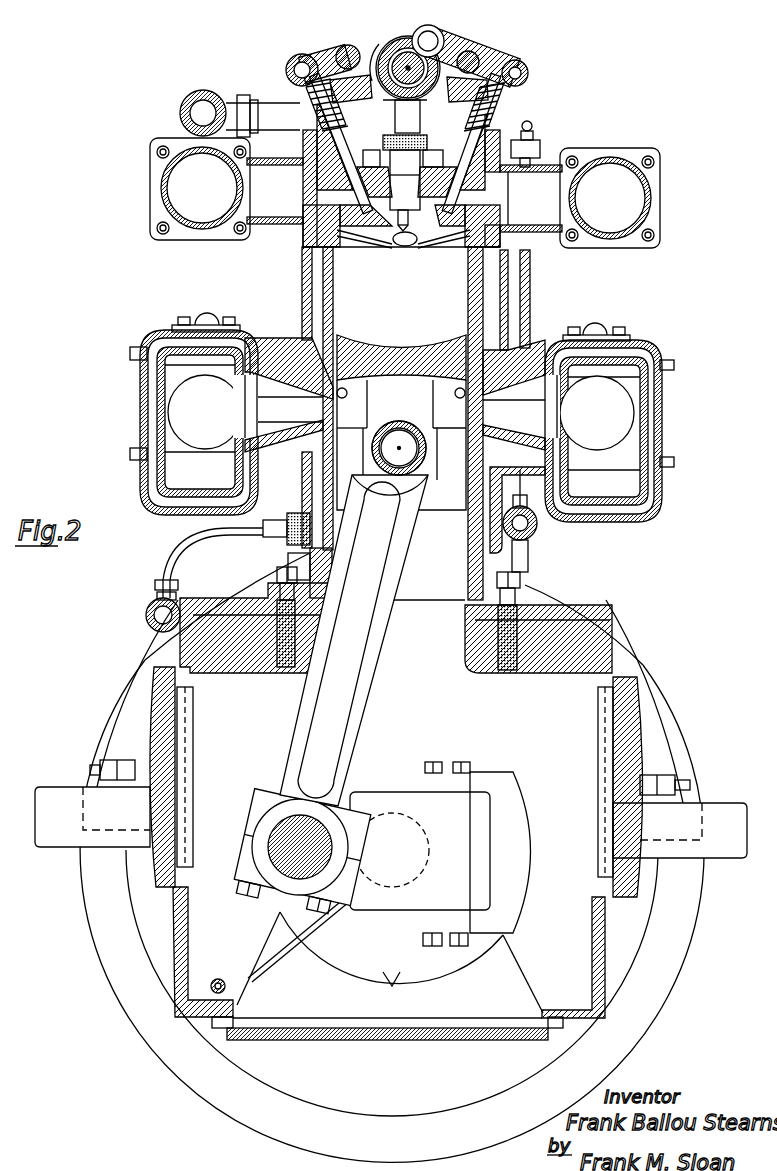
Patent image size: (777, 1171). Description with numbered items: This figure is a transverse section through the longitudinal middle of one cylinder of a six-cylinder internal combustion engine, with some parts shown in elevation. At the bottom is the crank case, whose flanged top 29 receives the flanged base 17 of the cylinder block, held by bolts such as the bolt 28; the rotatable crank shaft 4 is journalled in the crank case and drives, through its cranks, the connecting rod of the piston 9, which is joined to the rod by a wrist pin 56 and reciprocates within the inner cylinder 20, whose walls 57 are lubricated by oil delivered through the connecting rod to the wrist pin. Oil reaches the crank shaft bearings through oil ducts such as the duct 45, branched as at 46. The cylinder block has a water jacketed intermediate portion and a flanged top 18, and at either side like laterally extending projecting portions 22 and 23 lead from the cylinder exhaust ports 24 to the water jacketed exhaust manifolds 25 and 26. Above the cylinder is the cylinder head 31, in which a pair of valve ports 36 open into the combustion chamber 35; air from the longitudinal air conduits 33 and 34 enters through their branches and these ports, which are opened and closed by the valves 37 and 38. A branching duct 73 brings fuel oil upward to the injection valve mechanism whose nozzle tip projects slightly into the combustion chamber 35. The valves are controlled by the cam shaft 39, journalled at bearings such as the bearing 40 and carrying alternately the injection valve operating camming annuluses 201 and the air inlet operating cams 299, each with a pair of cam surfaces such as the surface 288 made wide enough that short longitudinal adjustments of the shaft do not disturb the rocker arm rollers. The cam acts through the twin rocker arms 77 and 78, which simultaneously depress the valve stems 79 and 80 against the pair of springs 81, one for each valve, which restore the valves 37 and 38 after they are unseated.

The crank shaft 4 is at (392, 797).
The piston 9 is at (402, 372).
The flanged base 17 is at (522, 588).
The flanged top 18 is at (507, 262).
The inner cylinder 20 is at (313, 290).
The laterally extending projecting portion 22 is at (254, 378).
The laterally extending projecting portion 23 is at (550, 380).
The cylinder exhaust ports 24 is at (323, 407).
The exhaust manifold 25 is at (163, 396).
The exhaust manifold 26 is at (635, 408).
The bolt 28 is at (512, 574).
The flanged top of the crank case 29 is at (614, 607).
The cylinder head 31 is at (516, 127).
The air conduit 33 is at (652, 200).
The air conduit 34 is at (157, 192).
The combustion chamber 35 is at (400, 275).
The valve ports 36 is at (401, 241).
The valve 37 is at (458, 217).
The valve 38 is at (351, 213).
The cam shaft 39 is at (406, 42).
The cam shaft bearing 40 is at (424, 29).
The oil duct 45 is at (218, 980).
The branch 46 is at (278, 967).
The wrist pin 56 is at (388, 478).
The walls of the engine cylinder 57 is at (468, 535).
The branching duct 73 is at (370, 152).
The rocker arm 77 is at (495, 57).
The rocker arm 78 is at (340, 47).
The valve stem 79 is at (493, 138).
The valve stem 80 is at (384, 117).
The spring 81 is at (388, 122).
The camming annulus 201 is at (378, 43).
The cam surface 288 is at (425, 100).
The air inlet operating cam 299 is at (396, 100).